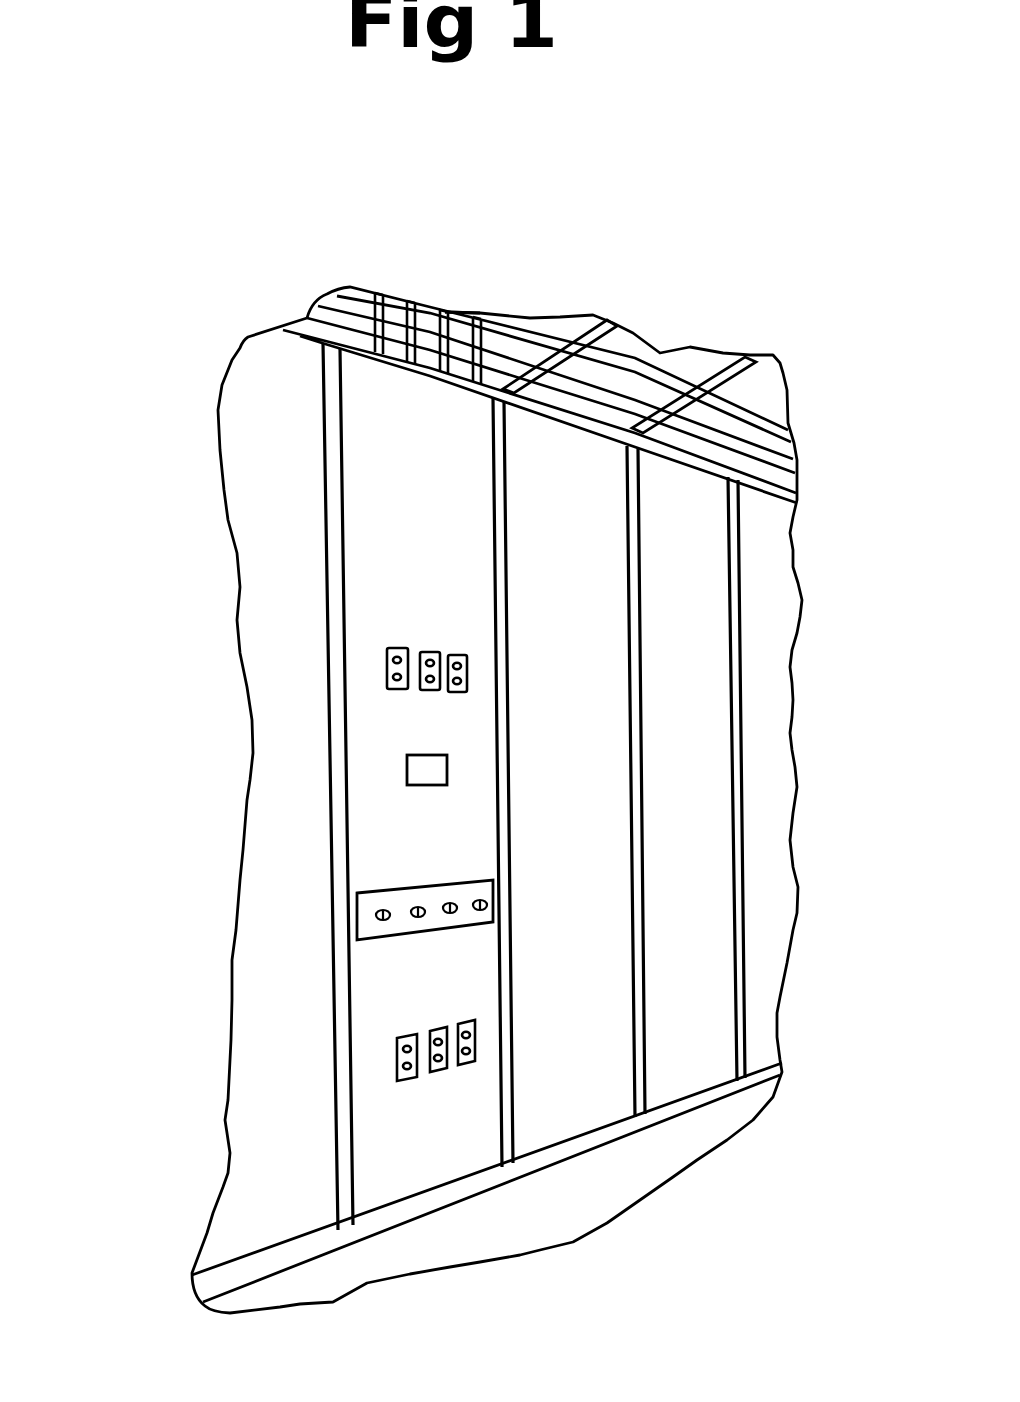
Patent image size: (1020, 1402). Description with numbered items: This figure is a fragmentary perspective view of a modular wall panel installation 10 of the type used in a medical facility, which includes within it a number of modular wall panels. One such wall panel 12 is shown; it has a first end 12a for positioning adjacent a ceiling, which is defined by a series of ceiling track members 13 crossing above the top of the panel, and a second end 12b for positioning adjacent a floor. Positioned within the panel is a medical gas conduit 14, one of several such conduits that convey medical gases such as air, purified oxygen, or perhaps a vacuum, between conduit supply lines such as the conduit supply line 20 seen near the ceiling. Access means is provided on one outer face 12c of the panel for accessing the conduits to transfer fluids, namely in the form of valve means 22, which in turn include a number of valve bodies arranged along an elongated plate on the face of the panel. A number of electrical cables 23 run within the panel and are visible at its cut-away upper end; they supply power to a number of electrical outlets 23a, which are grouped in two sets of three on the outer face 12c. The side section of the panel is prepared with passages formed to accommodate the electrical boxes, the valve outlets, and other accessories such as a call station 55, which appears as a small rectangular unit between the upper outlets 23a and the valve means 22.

The modular wall panel installation 10 is at (213, 387).
The wall panel 12 is at (442, 804).
The first end 12a is at (412, 375).
The second end 12b is at (437, 1188).
The outer face 12c is at (423, 525).
The ceiling track members 13 is at (657, 370).
The medical gas conduit 14 is at (323, 311).
The conduit supply line 20 is at (500, 318).
The valve means 22 is at (368, 903).
The electrical cables 23 is at (413, 302).
The electrical outlets 23a is at (387, 670).
The call station 55 is at (407, 767).